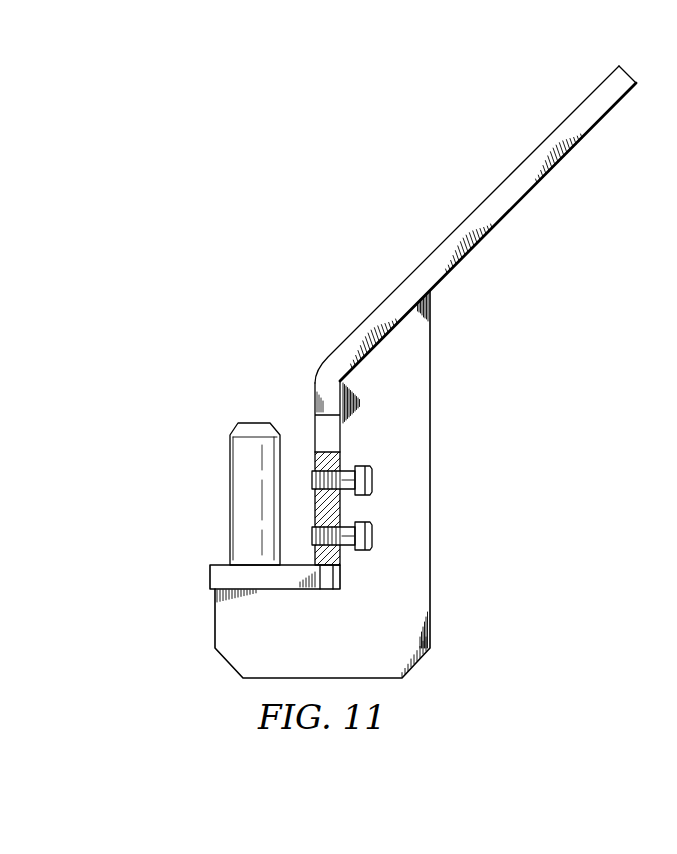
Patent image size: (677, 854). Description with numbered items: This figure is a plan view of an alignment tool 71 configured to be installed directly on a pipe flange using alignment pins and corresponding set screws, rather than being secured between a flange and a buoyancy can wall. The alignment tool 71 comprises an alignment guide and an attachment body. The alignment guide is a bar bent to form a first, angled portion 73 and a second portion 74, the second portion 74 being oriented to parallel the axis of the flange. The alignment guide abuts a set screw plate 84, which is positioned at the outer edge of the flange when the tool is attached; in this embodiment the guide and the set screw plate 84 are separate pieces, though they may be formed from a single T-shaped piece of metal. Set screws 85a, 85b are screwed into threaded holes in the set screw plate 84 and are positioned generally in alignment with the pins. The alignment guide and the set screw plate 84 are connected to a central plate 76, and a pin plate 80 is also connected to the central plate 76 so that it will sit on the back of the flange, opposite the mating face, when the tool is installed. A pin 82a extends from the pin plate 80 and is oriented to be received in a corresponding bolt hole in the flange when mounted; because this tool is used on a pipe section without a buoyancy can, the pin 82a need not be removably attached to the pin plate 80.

The alignment tool 71 is at (446, 327).
The first, angled portion 73 is at (503, 181).
The second portion 74 is at (317, 384).
The central plate 76 is at (431, 528).
The pin plate 80 is at (210, 578).
The pin 82a is at (230, 457).
The set screw plate 84 is at (312, 456).
The set screw 85a is at (362, 466).
The set screw 85b is at (362, 550).